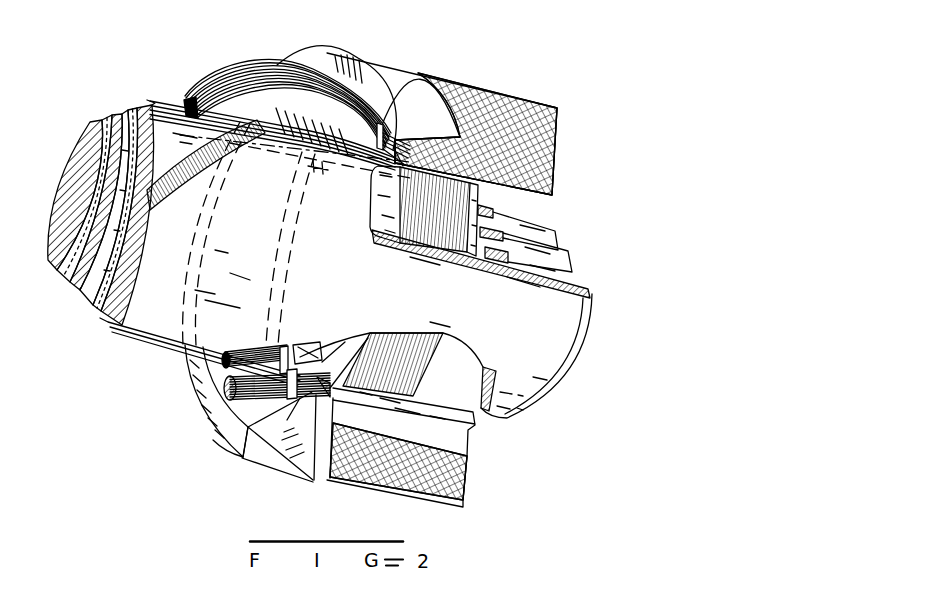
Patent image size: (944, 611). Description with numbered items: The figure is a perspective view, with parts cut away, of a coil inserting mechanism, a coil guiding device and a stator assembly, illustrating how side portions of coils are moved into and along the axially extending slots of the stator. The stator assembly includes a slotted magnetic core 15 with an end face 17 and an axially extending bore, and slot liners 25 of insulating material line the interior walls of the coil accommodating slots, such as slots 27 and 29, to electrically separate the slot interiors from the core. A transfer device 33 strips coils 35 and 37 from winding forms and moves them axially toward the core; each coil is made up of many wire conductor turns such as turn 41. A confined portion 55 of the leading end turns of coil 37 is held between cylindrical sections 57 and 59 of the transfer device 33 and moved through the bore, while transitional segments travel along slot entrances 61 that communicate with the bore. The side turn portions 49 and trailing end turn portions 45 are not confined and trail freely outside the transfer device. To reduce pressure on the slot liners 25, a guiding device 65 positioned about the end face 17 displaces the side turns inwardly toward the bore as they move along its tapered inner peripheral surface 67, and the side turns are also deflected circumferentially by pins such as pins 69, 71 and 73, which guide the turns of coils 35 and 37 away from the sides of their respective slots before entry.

The slotted magnetic core 15 is at (517, 108).
The end face 17 is at (277, 455).
The slot liners 25 is at (314, 385).
The slot 27 is at (311, 350).
The slot 29 is at (287, 420).
The transfer device 33 is at (77, 122).
The coil 35 is at (225, 360).
The coil 37 is at (224, 76).
The turn 41 is at (298, 60).
The trailing end turn portions 45 is at (188, 104).
The side turn portions 49 is at (285, 66).
The confined portion 55 is at (496, 370).
The cylindrical section 57 is at (478, 212).
The cylindrical section 59 is at (586, 291).
The slot entrance 61 is at (337, 386).
The guiding device 65 is at (366, 55).
The tapered inner peripheral surface 67 is at (228, 450).
The pin 69 is at (242, 428).
The pin 71 is at (284, 345).
The pin 73 is at (417, 74).